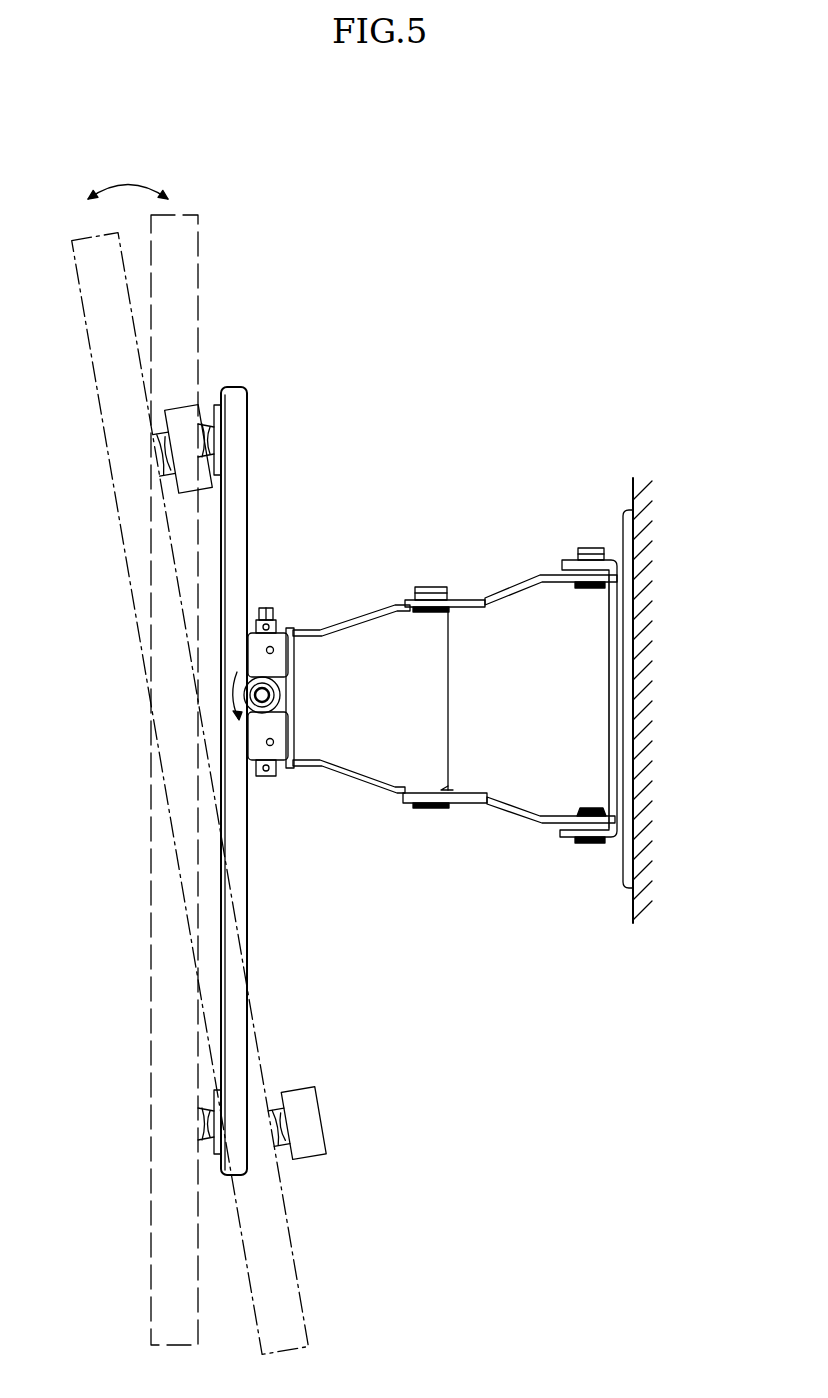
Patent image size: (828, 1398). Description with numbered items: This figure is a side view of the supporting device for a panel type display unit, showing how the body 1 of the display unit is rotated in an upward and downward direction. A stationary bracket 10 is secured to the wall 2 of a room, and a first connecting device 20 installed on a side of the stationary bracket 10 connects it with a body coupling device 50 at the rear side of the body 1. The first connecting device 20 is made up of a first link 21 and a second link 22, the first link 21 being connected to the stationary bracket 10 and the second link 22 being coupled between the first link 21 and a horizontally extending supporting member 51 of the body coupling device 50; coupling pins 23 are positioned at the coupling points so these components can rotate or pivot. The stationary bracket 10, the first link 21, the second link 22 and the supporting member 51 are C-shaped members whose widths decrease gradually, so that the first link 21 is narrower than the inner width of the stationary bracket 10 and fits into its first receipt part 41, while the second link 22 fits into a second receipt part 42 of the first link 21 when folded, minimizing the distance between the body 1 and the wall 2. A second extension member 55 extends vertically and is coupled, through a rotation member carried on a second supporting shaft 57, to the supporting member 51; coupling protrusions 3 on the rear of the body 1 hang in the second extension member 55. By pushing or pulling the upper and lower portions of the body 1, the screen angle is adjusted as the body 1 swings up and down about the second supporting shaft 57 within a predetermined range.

The body 1 is at (200, 273).
The wall 2 is at (633, 478).
The coupling protrusions 3 is at (213, 1166).
The stationary bracket 10 is at (628, 615).
The first connecting device 20 is at (406, 573).
The first link 21 is at (510, 578).
The second link 22 is at (351, 618).
The coupling pins 23 is at (432, 586).
The first receipt part 41 is at (618, 695).
The second receipt part 42 is at (518, 750).
The body coupling device 50 is at (259, 520).
The supporting member 51 is at (290, 768).
The second extension member 55 is at (243, 910).
The second supporting shaft 57 is at (265, 695).